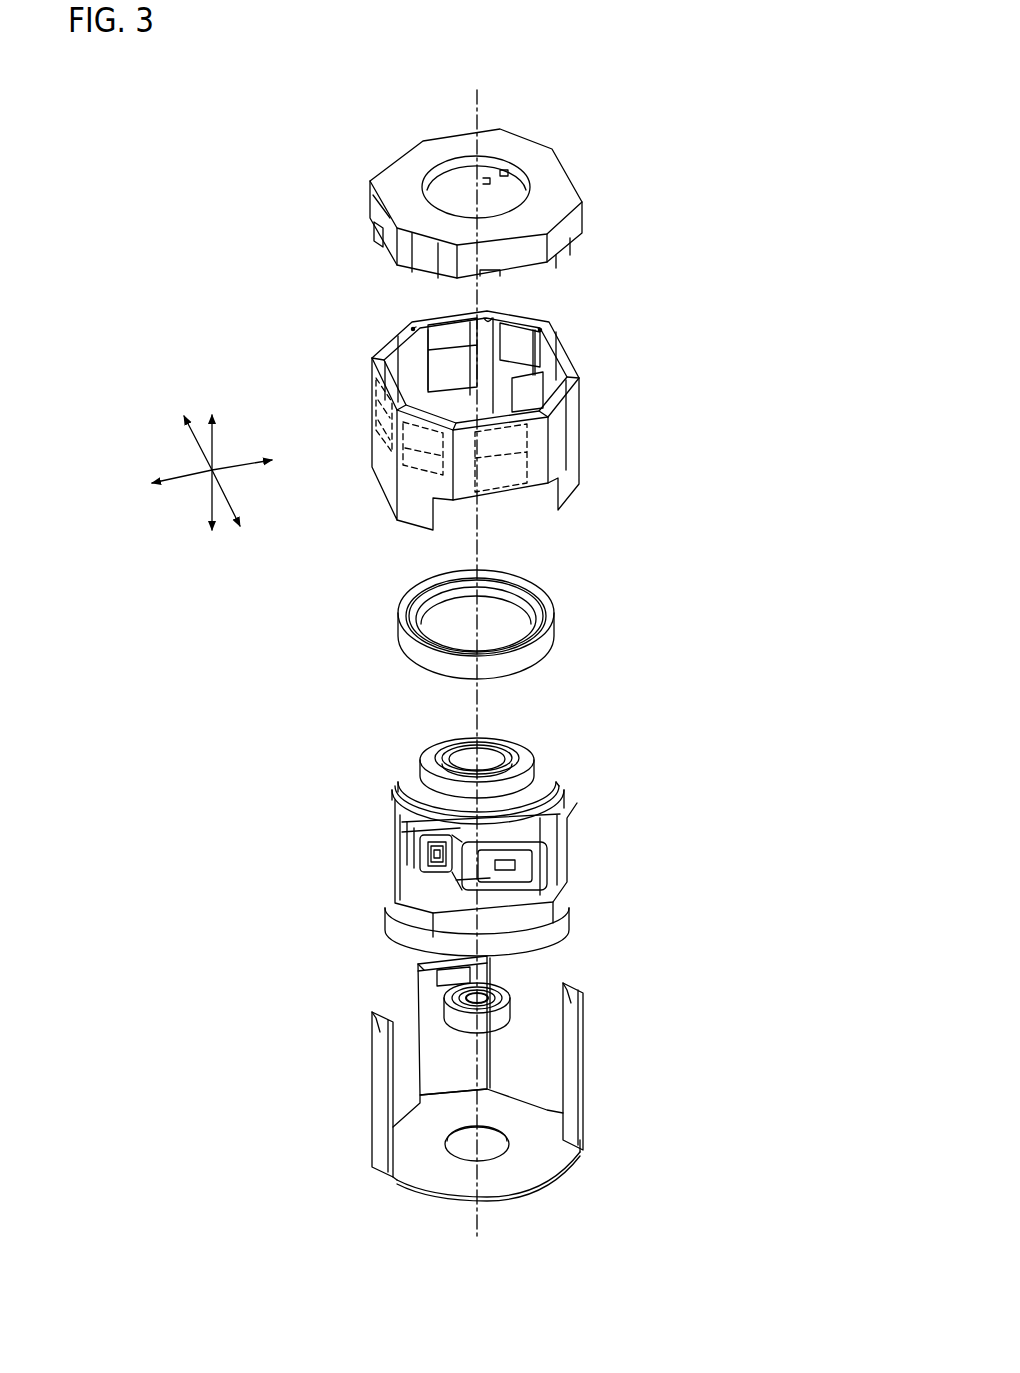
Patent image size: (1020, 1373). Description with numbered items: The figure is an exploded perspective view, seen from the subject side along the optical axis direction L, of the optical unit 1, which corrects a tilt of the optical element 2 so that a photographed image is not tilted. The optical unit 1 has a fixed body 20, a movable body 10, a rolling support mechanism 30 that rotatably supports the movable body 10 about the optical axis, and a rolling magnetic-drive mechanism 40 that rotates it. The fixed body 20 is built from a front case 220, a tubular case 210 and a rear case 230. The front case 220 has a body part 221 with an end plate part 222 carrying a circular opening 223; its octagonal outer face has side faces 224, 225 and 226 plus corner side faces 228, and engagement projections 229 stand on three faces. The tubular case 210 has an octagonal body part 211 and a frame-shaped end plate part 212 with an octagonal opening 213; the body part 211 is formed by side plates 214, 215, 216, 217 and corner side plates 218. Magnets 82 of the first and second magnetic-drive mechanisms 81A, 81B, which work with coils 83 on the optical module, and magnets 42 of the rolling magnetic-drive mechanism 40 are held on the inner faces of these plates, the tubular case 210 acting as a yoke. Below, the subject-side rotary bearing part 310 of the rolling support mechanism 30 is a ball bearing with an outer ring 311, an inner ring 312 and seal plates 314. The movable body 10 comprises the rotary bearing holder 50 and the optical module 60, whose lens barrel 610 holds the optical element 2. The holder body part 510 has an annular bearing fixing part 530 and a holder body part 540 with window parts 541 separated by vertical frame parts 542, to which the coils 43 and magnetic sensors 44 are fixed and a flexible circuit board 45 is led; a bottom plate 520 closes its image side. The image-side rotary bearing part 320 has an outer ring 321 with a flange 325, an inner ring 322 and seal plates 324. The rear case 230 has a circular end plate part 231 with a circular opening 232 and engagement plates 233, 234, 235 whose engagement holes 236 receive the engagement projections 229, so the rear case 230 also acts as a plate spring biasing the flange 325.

The optical unit 1 is at (209, 118).
The optical axis direction L is at (478, 114).
The fixed body 20 is at (757, 888).
The front case 220 is at (612, 233).
The body part 221 is at (583, 222).
The end plate part 222 is at (555, 190).
The circular opening 223 is at (505, 168).
The side face 224 is at (516, 252).
The side face 225 is at (434, 150).
The side face 226 is at (372, 205).
The side faces 228 is at (392, 170).
The engagement projections 229 is at (378, 236).
The tubular case 210 is at (612, 408).
The body part 211 is at (583, 457).
The end plate part 212 is at (573, 395).
The opening 213 is at (492, 316).
The side plate 214 is at (468, 495).
The side plate 215 is at (480, 405).
The side plate 216 is at (376, 466).
The side plate 217 is at (572, 425).
The side plates 218 is at (395, 358).
The magnet 82 is at (469, 417).
The first magnetic-drive mechanism 81A is at (469, 417).
The second magnetic-drive mechanism 81B is at (435, 322).
The magnet 42 is at (475, 404).
The rolling magnetic-drive mechanism 40 is at (530, 335).
The rolling support mechanism 30 is at (212, 982).
The subject-side rotary bearing part 310 is at (383, 632).
The outer ring 311 is at (548, 638).
The inner ring 312 is at (520, 603).
The seal plates 314 is at (543, 616).
The movable body 10 is at (580, 752).
The rotary bearing holder 50 is at (393, 776).
The optical module 60 is at (519, 745).
The lens barrel 610 is at (455, 750).
The optical element 2 is at (484, 760).
The bearing fixing part 530 is at (532, 762).
The holder body part 540 is at (546, 856).
The holder body part 510 is at (570, 845).
The vertical frame parts 542 is at (398, 813).
The window parts 541 is at (400, 852).
The coil 83 is at (540, 832).
The flexible circuit board 45 is at (402, 804).
The coil 43 is at (430, 860).
The magnetic sensors 44 is at (438, 868).
The bottom plate 520 is at (560, 913).
The image-side rotary bearing part 320 is at (418, 1003).
The outer ring 321 is at (495, 1020).
The inner ring 322 is at (493, 1003).
The seal plates 324 is at (485, 990).
The flange 325 is at (506, 995).
The rear case 230 is at (640, 1032).
The end plate part 231 is at (527, 1176).
The circular opening 232 is at (478, 1152).
The engagement plate 233 is at (481, 1070).
The engagement plate 234 is at (386, 1130).
The engagement plate 235 is at (584, 1110).
The engagement holes 236 is at (416, 980).